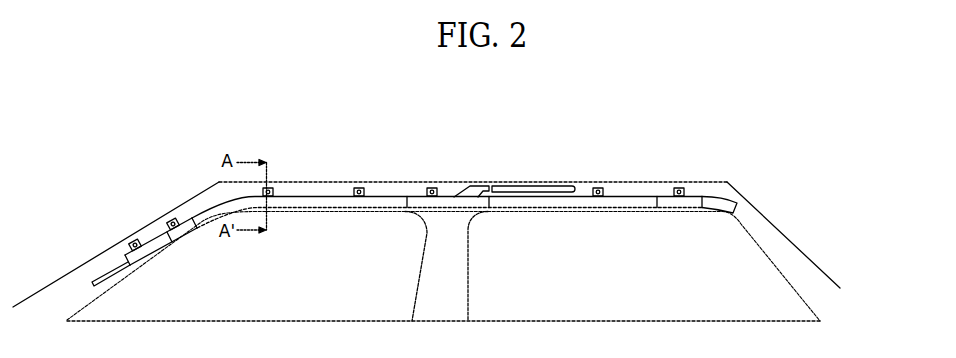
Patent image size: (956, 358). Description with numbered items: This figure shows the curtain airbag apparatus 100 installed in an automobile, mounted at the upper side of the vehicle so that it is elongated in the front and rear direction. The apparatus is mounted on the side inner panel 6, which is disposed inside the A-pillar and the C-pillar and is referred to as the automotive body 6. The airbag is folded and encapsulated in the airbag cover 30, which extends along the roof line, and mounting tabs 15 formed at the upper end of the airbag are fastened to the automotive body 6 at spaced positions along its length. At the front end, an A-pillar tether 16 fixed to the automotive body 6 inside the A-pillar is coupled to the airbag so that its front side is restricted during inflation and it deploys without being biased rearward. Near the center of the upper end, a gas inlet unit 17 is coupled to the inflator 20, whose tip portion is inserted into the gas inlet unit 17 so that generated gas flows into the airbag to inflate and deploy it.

The side inner panel 6 is at (643, 192).
The curtain airbag apparatus 100 is at (308, 190).
The airbag cover 30 is at (379, 201).
The A-pillar tether 16 is at (108, 277).
The mounting tabs 15 is at (269, 187).
The gas inlet unit 17 is at (470, 189).
The inflator 20 is at (532, 188).